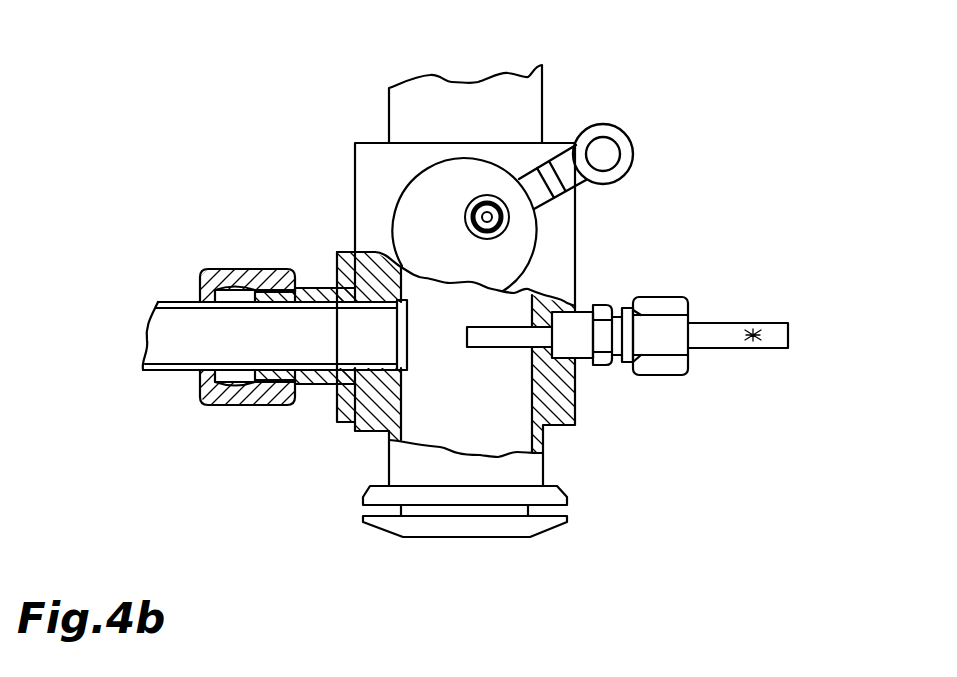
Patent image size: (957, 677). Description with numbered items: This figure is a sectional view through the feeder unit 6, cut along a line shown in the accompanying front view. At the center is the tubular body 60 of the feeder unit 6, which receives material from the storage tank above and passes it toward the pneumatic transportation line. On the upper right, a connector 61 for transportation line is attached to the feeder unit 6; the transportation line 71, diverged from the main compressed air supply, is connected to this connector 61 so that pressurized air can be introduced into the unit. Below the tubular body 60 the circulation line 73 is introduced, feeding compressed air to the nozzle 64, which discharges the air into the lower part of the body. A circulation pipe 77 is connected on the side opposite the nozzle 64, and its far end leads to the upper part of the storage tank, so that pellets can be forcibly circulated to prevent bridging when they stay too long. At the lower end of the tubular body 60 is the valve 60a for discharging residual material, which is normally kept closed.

The feeder unit 6 is at (607, 96).
The tubular body 60 is at (562, 241).
The valve for discharging a residual material 60a is at (548, 527).
The connector for transportation line 61 is at (618, 137).
The transportation line 71 is at (602, 159).
The nozzle 64 is at (505, 337).
The circulation line 73 is at (743, 323).
The circulation pipe 77 is at (159, 373).